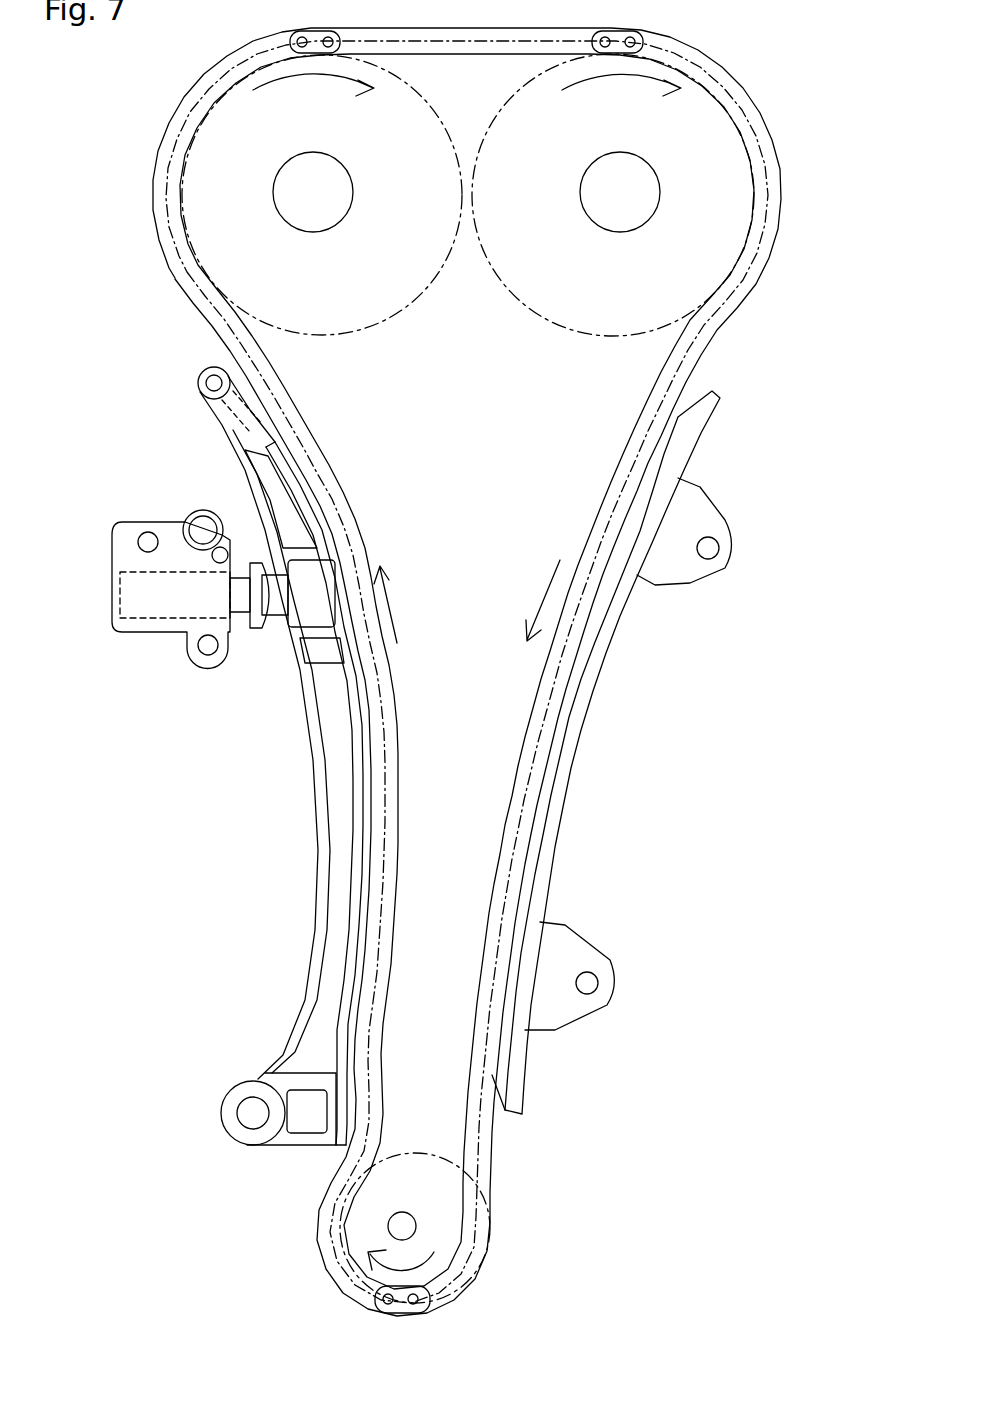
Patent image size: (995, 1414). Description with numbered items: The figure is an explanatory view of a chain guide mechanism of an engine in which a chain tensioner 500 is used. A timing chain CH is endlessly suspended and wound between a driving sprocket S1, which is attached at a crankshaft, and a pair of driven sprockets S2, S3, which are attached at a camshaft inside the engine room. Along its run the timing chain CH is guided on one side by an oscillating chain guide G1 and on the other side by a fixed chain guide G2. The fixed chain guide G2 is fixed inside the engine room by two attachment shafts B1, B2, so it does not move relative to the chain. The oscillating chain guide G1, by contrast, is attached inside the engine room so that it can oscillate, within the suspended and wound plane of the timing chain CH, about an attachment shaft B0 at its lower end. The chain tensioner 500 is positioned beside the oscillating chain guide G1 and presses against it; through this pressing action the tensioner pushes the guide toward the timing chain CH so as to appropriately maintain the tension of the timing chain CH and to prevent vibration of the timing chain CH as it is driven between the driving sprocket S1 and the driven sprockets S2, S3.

The timing chain CH is at (700, 345).
The driving sprocket S1 is at (440, 1226).
The driven sprocket S2 is at (215, 182).
The driven sprocket S3 is at (695, 178).
The oscillating chain guide G1 is at (327, 985).
The fixed chain guide G2 is at (550, 815).
The chain tensioner 500 is at (135, 553).
The attachment shaft B0 is at (253, 1113).
The attachment shaft B1 is at (720, 548).
The attachment shaft B2 is at (597, 983).